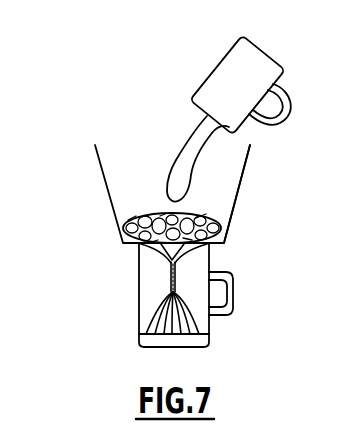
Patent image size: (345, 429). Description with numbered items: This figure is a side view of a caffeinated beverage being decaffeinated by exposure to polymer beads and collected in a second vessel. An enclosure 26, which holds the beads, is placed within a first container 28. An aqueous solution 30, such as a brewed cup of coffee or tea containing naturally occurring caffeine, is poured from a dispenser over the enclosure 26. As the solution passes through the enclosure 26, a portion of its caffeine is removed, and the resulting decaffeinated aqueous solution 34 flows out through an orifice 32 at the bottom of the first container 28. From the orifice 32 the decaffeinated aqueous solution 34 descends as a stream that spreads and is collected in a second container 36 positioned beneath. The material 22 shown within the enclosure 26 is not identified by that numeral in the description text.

The particulate material 22 is at (124, 222).
The enclosure 26 is at (216, 213).
The first container 28 is at (108, 192).
The aqueous solution 30 is at (175, 162).
The orifice 32 is at (207, 263).
The decaffeinated aqueous solution 34 is at (163, 306).
The second container 36 is at (139, 288).